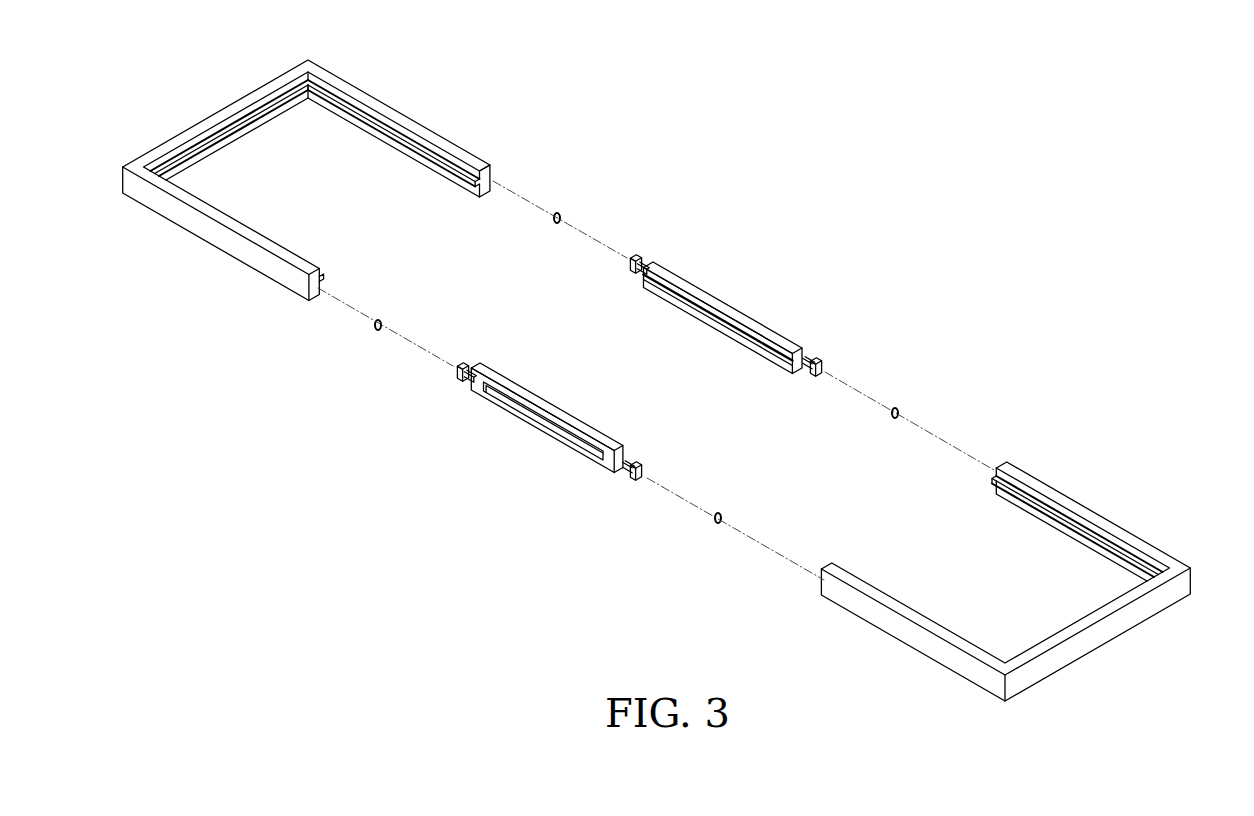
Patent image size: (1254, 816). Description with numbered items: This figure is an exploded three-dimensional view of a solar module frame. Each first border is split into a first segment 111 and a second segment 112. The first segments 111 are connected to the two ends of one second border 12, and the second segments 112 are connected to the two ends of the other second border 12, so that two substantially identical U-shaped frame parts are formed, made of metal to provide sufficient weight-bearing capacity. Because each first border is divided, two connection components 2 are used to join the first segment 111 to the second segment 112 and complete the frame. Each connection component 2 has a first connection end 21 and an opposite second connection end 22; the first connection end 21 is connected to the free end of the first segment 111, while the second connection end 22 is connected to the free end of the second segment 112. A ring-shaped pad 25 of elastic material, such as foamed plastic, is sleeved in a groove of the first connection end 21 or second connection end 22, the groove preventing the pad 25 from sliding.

The first segment 111 is at (424, 132).
The second segment 112 is at (1107, 525).
The second border 12 is at (1017, 582).
The connection component 2 is at (743, 318).
The first connection end 21 is at (638, 256).
The second connection end 22 is at (820, 360).
The pad 25 is at (560, 212).